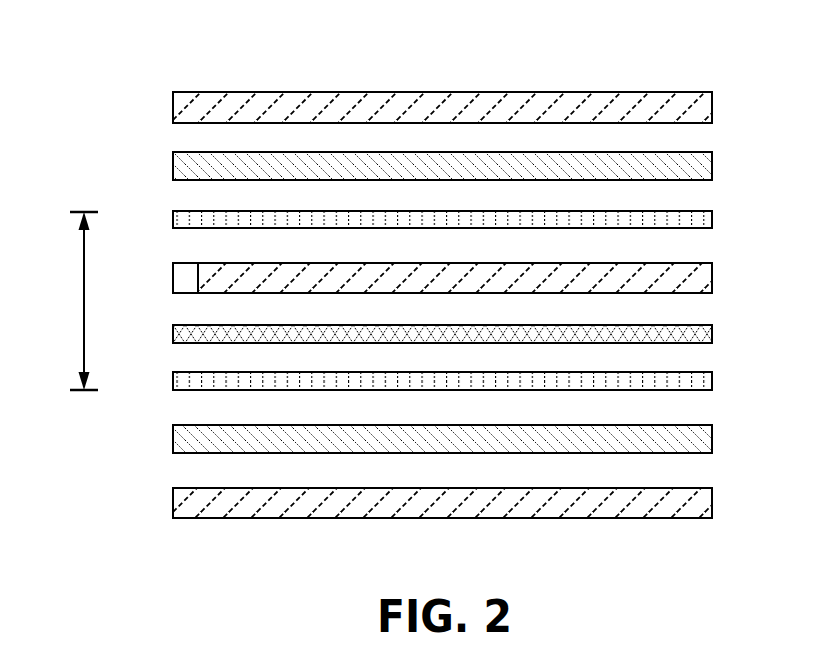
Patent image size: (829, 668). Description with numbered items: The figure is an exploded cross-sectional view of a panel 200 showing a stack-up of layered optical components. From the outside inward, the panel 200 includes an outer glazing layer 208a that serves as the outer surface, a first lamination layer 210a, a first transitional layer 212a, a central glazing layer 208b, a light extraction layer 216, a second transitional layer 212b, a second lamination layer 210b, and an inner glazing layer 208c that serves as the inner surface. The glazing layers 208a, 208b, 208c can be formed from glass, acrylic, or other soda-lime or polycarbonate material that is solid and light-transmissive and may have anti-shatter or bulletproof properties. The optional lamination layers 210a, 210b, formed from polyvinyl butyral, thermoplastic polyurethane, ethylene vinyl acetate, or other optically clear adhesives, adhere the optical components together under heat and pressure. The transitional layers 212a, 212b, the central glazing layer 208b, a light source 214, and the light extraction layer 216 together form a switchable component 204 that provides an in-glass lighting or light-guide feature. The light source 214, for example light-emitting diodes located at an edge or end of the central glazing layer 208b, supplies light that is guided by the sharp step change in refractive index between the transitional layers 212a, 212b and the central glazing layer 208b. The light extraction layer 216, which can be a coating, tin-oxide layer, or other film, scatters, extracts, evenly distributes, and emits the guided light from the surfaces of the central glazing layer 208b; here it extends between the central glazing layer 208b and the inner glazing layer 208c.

The panel 200 is at (207, 66).
The switchable component 204 is at (77, 213).
The outer glazing layer 208a is at (712, 100).
The central glazing layer 208b is at (449, 279).
The inner glazing layer 208c is at (712, 500).
The lamination layer 210a is at (712, 166).
The lamination layer 210b is at (712, 436).
The transitional layer 212a is at (712, 218).
The transitional layer 212b is at (712, 380).
The light source 214 is at (173, 282).
The light extraction layer 216 is at (712, 332).